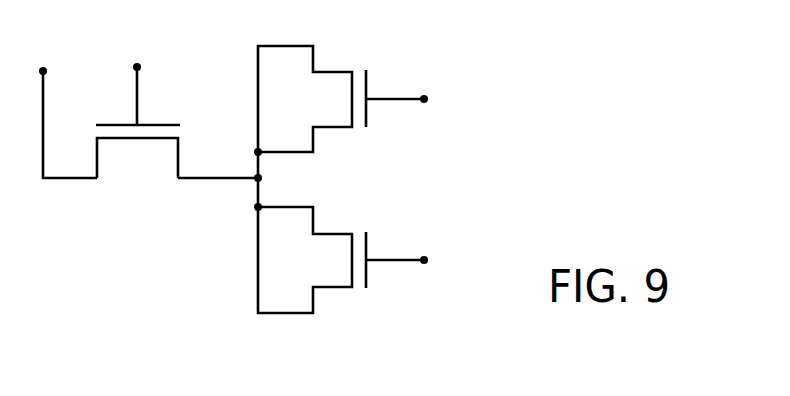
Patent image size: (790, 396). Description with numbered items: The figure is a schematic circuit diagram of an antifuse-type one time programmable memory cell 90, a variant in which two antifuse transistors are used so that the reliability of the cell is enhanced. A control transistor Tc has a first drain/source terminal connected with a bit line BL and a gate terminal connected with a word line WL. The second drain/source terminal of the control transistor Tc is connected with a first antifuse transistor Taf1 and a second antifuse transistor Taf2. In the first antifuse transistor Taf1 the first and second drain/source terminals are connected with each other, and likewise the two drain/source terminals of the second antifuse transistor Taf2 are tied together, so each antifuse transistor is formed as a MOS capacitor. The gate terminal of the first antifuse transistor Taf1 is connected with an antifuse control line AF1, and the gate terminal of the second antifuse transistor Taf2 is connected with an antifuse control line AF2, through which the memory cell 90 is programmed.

The OTP memory cell 90 is at (290, 159).
The bit line BL is at (60, 105).
The word line WL is at (132, 78).
The control transistor Tc is at (138, 164).
The first antifuse transistor Taf1 is at (312, 99).
The second antifuse transistor Taf2 is at (312, 260).
The antifuse control line AF1 is at (410, 117).
The antifuse control line AF2 is at (410, 278).